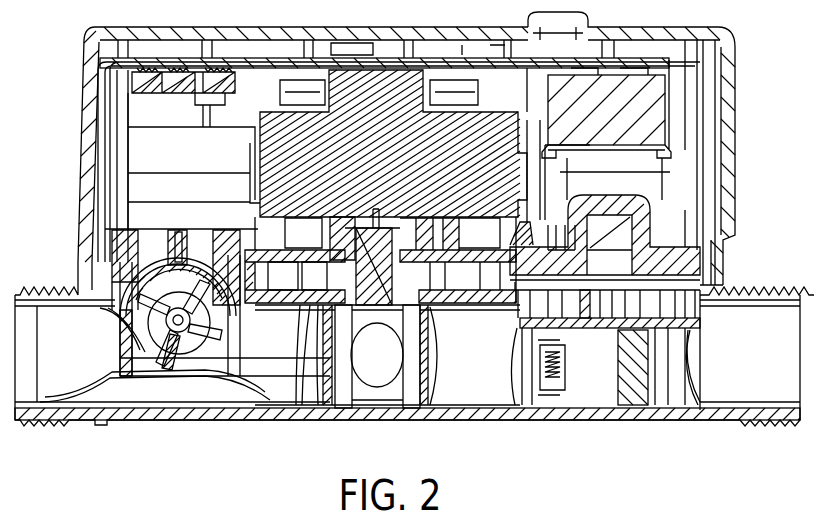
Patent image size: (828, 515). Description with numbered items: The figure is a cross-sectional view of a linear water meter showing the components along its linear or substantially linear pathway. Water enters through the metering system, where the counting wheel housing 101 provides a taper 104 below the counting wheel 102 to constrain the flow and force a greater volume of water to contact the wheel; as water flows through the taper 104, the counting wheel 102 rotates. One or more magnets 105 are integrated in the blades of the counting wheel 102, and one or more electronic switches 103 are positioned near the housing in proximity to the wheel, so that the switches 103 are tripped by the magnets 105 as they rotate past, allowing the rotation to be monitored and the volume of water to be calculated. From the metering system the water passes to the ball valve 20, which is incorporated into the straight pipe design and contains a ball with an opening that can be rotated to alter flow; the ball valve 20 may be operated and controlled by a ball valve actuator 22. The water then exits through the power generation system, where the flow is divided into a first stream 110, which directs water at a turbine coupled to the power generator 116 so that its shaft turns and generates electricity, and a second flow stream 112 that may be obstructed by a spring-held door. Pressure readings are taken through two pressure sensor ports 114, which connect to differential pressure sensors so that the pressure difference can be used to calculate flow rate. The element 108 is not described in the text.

The ball valve 20 is at (376, 394).
The ball valve actuator 22 is at (394, 207).
The counting wheel housing 101 is at (100, 285).
The counting wheel 102 is at (163, 345).
The electronic switch 103 is at (240, 250).
The taper 104 is at (158, 372).
The magnet 105 is at (152, 305).
The flow straightener 108 is at (319, 398).
The first stream 110 is at (502, 323).
The second flow stream 112 is at (513, 377).
The pressure sensor port 114 is at (183, 262).
The power generator 116 is at (659, 115).